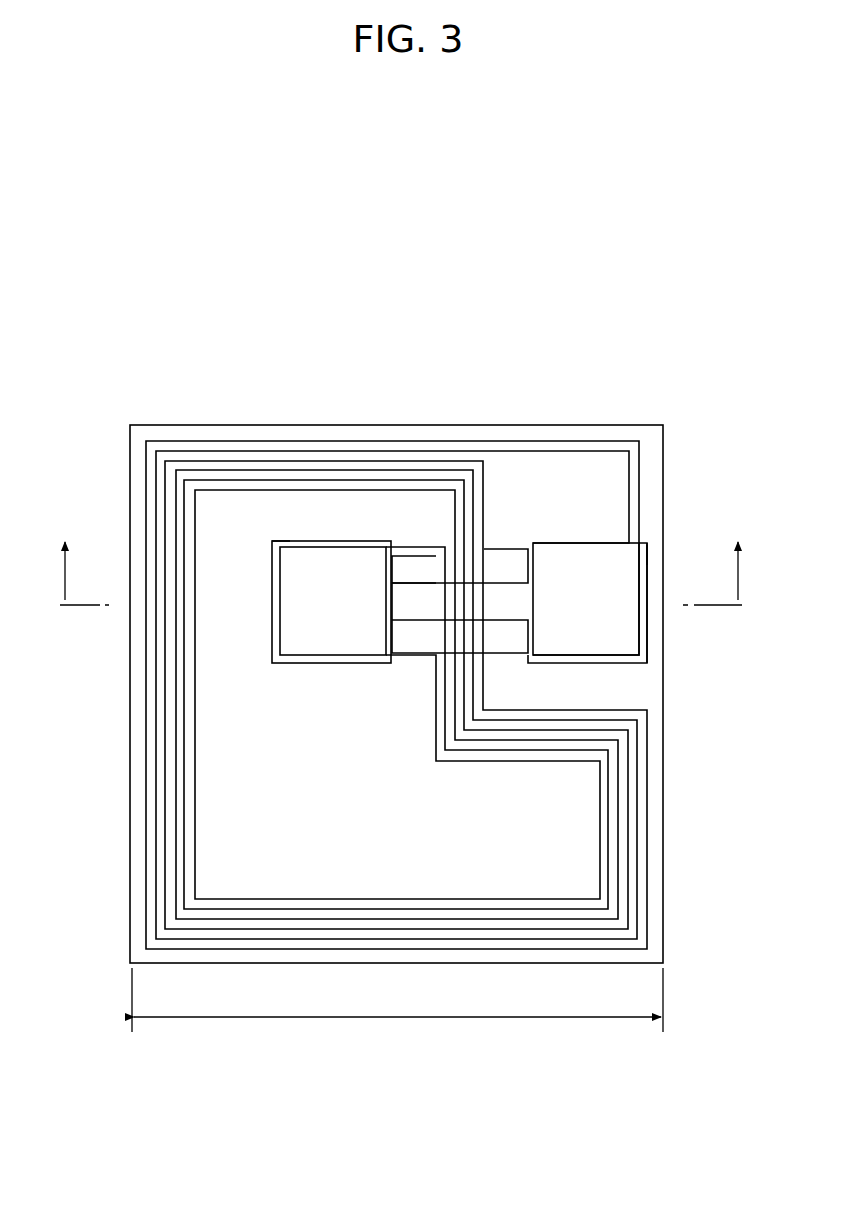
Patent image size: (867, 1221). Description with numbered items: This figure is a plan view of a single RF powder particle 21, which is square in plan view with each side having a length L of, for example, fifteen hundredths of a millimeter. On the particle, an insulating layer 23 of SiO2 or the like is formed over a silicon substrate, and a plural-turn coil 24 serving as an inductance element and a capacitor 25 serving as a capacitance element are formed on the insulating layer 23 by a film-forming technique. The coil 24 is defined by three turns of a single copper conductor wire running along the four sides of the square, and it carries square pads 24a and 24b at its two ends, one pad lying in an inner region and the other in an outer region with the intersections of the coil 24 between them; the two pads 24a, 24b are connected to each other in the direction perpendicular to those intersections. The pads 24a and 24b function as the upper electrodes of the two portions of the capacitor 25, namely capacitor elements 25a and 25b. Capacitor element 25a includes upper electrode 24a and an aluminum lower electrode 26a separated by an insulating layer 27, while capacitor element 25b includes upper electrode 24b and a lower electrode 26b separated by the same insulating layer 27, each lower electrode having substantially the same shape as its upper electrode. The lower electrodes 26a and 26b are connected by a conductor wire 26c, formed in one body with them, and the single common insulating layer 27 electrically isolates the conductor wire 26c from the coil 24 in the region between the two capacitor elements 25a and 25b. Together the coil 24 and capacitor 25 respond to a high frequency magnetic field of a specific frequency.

The RF powder particle 21 is at (462, 405).
The insulating layer 23 is at (568, 432).
The coil 24 is at (328, 446).
The pad 24a is at (305, 608).
The pad 24b is at (580, 542).
The capacitor 25 is at (375, 676).
The capacitor element 25a is at (300, 541).
The capacitor element 25b is at (650, 612).
The lower electrode 26a is at (268, 538).
The lower electrode 26b is at (650, 553).
The conductor wire 26c is at (413, 582).
The insulating layer 27 is at (510, 545).